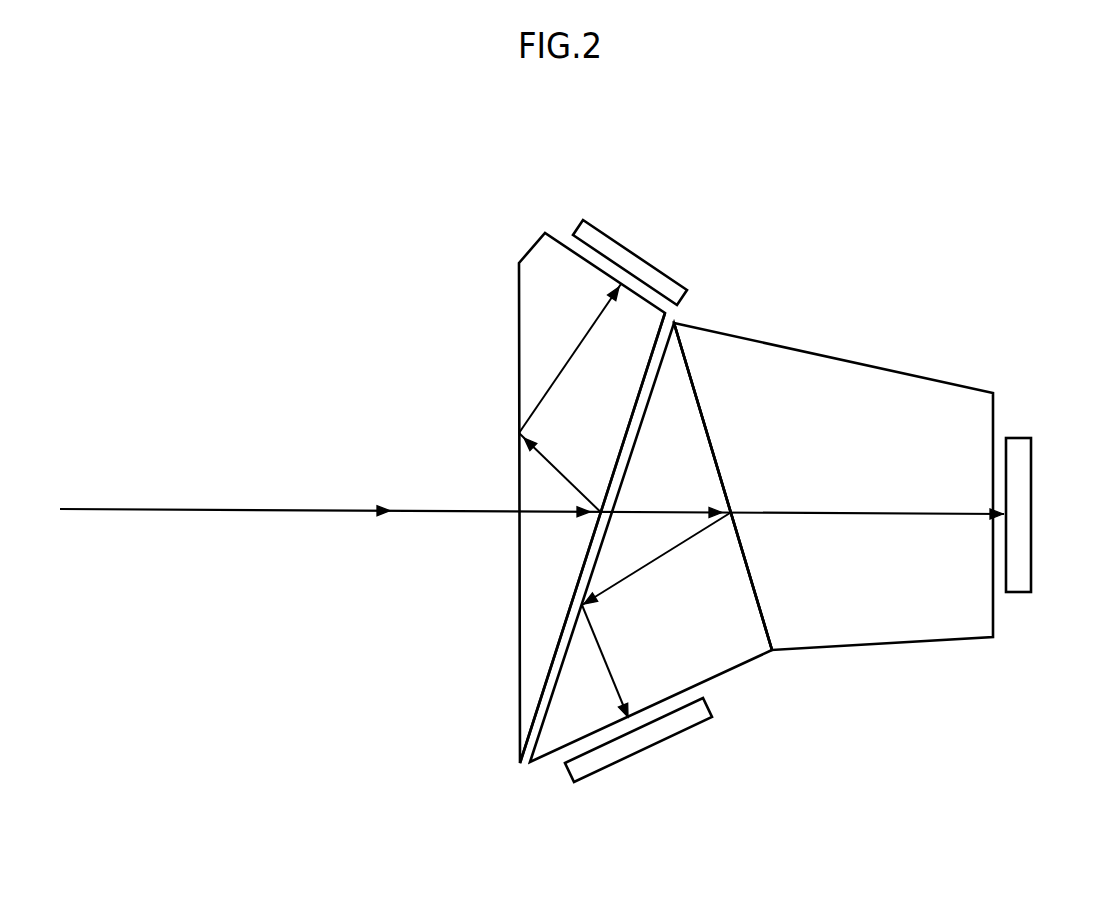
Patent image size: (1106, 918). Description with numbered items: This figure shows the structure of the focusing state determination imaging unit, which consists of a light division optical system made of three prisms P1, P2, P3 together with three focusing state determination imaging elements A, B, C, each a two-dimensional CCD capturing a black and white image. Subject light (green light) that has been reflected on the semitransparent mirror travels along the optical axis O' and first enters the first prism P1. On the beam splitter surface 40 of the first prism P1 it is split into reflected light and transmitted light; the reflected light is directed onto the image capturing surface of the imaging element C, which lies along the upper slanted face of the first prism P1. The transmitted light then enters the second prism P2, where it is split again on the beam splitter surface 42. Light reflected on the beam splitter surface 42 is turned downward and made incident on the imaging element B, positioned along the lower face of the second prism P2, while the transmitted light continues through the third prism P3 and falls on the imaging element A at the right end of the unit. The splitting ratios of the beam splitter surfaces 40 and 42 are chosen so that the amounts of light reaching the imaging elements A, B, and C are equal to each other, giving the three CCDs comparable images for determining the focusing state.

The first prism P1 is at (551, 342).
The second prism P2 is at (713, 640).
The third prism P3 is at (860, 413).
The beam splitter surface 40 is at (626, 438).
The beam splitter surface 42 is at (719, 467).
The imaging element A is at (1020, 507).
The imaging element B is at (660, 735).
The imaging element C is at (640, 262).
The optical axis O' is at (528, 513).